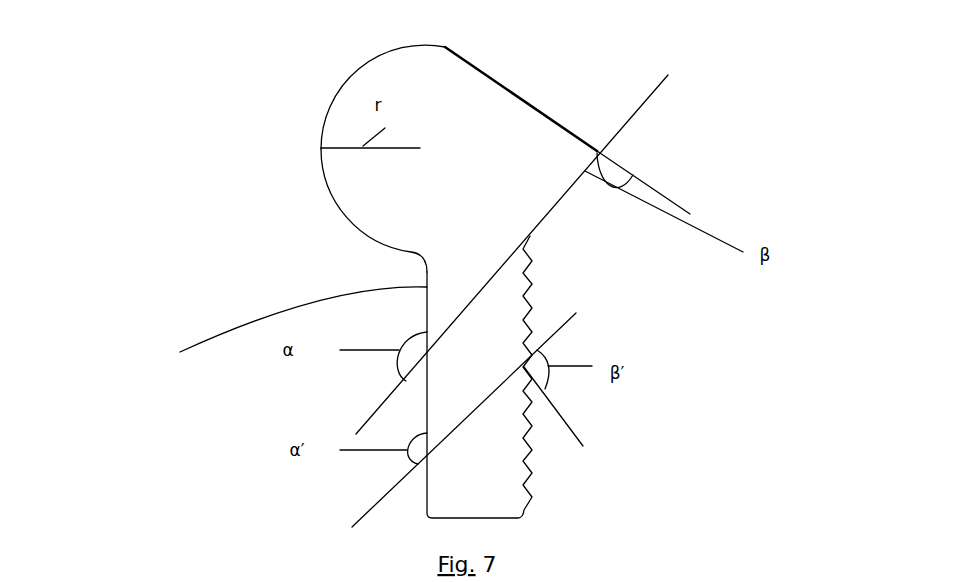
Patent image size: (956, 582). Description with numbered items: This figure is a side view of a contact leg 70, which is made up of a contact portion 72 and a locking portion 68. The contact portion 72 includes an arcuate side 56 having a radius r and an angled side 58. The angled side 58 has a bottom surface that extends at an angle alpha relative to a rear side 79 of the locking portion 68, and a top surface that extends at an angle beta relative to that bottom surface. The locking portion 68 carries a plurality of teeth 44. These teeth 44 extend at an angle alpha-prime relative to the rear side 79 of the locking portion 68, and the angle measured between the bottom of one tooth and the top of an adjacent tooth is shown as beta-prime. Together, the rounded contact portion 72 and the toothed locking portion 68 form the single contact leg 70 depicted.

The contact leg 70 is at (190, 100).
The arcuate side 56 is at (317, 98).
The angled side 58 is at (642, 63).
The contact portion 72 is at (343, 212).
The rear side 79 is at (278, 336).
The locking portion 68 is at (550, 302).
The teeth 44 is at (532, 497).